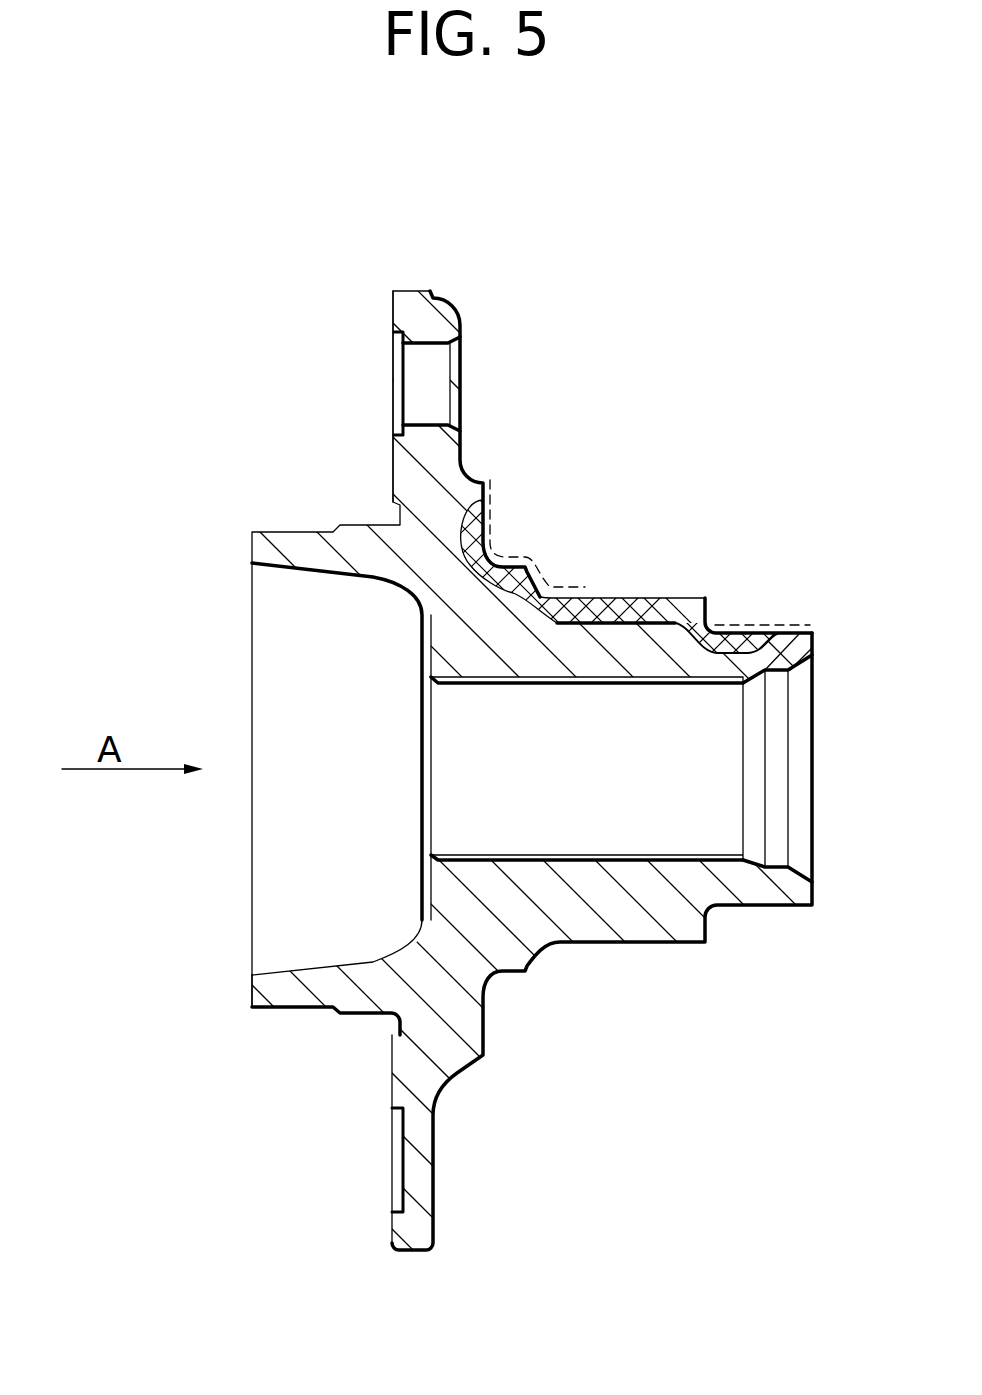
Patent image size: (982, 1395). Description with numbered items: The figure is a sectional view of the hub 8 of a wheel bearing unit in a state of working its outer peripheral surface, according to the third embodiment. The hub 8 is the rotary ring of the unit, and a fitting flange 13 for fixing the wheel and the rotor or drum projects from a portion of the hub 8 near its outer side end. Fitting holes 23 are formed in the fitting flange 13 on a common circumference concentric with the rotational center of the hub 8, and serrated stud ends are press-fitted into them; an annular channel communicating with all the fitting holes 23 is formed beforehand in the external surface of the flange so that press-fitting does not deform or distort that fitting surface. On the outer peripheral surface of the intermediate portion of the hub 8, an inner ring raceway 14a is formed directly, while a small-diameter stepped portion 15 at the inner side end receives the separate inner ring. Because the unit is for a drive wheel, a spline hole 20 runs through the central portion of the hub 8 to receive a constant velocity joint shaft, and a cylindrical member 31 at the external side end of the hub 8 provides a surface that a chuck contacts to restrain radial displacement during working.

The fitting flange 13 is at (412, 302).
The fitting hole 23 is at (437, 345).
The inner ring raceway 14a is at (547, 587).
The small-diameter stepped portion 15 is at (753, 632).
The hub 8 is at (423, 577).
The spline hole 20 is at (718, 853).
The cylindrical member 31 is at (262, 992).